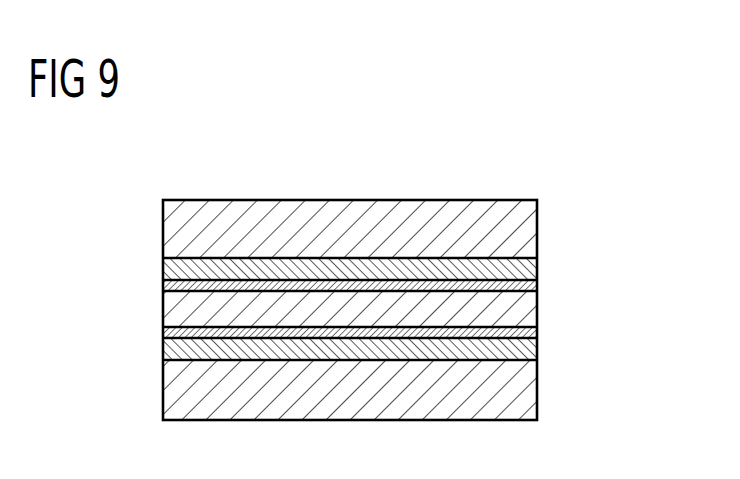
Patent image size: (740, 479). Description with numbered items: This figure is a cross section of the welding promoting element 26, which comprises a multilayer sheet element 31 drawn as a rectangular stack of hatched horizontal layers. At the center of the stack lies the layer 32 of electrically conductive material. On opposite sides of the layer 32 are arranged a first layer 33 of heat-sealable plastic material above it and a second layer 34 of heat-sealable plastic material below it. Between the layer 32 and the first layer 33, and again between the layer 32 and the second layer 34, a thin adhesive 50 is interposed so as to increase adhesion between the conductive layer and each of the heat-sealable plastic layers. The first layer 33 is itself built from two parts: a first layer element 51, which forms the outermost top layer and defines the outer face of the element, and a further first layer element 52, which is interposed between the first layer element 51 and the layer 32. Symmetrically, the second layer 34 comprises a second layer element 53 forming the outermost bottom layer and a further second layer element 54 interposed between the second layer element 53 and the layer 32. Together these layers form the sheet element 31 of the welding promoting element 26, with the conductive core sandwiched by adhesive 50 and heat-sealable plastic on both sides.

The welding promoting element 26 is at (351, 273).
The sheet element 31 is at (351, 310).
The layer of electrically conductive material 32 is at (168, 313).
The first layer of heat-sealable plastic material 33 is at (283, 216).
The second layer of heat-sealable plastic material 34 is at (282, 403).
The adhesive 50 is at (537, 284).
The first layer element 51 is at (168, 218).
The further first layer element 52 is at (366, 268).
The second layer element 53 is at (168, 407).
The further second layer element 54 is at (374, 350).